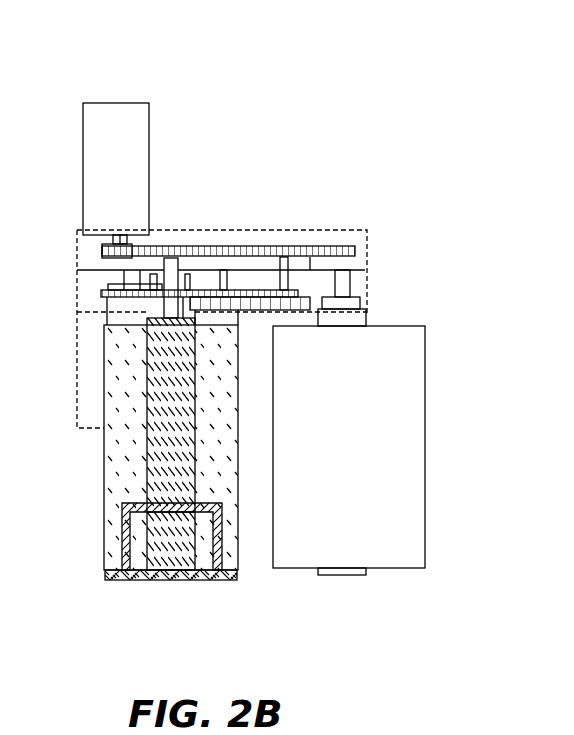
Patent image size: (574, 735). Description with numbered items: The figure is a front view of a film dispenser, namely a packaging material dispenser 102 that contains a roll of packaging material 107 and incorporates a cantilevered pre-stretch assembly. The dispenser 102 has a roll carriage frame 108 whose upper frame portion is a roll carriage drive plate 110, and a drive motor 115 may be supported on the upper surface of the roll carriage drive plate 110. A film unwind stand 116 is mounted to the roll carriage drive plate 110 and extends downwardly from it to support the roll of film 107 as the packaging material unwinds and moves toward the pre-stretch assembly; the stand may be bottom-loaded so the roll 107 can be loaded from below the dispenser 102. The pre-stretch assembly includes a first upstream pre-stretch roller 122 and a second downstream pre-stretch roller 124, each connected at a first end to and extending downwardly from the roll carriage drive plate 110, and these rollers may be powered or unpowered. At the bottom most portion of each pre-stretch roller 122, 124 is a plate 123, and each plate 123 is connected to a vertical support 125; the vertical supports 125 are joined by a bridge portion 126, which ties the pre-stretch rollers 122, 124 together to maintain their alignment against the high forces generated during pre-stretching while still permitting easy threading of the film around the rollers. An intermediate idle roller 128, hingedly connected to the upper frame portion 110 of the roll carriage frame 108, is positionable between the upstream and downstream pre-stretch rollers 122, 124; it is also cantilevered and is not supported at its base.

The packaging material dispenser 102 is at (312, 97).
The roll of packaging material 107 is at (363, 453).
The roll carriage frame 108 is at (310, 197).
The roll carriage drive plate 110 is at (353, 246).
The drive motor 115 is at (120, 147).
The film unwind stand 116 is at (352, 312).
The first upstream pre-stretch roller 122 is at (218, 480).
The plate 123 is at (208, 582).
The second downstream pre-stretch roller 124 is at (122, 452).
The vertical support 125 is at (125, 540).
The bridge portion 126 is at (165, 510).
The intermediate idle roller 128 is at (158, 378).